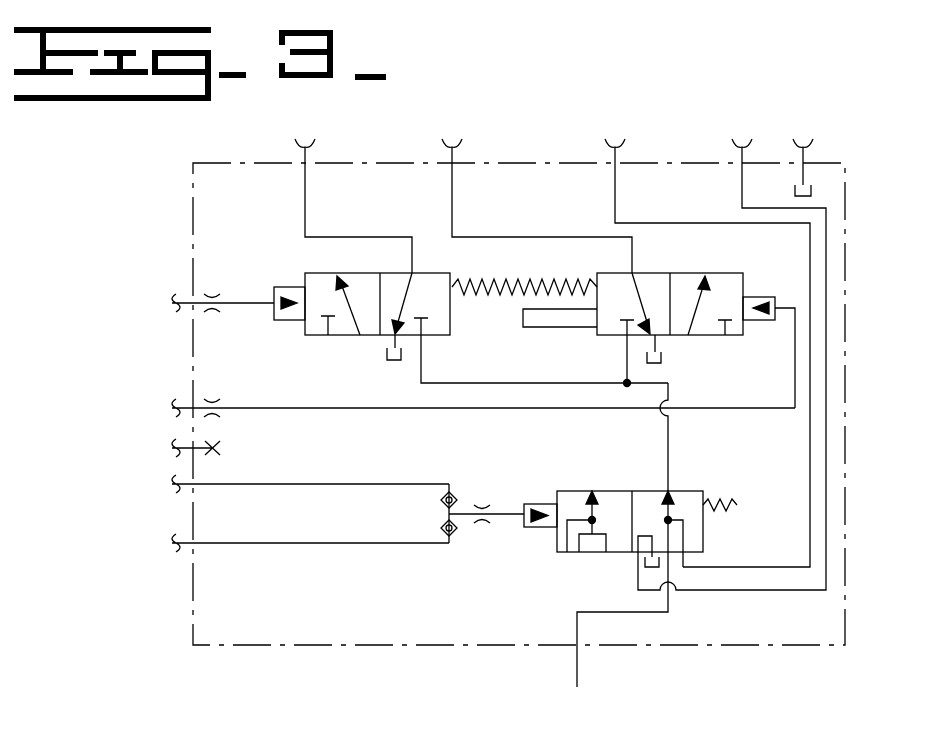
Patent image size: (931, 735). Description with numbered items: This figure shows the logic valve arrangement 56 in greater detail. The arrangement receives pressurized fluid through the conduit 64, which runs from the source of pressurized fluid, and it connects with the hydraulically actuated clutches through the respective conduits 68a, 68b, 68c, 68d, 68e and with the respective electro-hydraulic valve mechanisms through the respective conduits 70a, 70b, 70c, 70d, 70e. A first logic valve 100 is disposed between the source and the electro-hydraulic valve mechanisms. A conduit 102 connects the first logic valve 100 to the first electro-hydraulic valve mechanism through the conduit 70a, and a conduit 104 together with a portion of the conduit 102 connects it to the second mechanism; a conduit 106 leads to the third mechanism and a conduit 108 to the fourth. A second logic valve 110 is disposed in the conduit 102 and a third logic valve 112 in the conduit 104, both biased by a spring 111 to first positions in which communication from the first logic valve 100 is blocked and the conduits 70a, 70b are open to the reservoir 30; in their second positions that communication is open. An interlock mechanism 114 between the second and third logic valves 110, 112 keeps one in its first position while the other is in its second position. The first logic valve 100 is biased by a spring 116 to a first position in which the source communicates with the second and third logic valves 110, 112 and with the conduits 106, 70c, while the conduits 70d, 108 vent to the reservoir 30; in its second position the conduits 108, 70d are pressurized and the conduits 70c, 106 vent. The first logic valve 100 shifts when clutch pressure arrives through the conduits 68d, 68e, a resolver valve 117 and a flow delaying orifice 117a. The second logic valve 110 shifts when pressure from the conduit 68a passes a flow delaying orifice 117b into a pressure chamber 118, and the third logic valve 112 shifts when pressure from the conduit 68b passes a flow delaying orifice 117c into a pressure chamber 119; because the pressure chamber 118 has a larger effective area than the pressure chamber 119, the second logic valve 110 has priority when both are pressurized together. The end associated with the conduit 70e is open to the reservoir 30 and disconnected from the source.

The logic valve arrangement 56 is at (193, 218).
The conduit 64 is at (580, 655).
The conduit 68a is at (185, 303).
The conduit 68b is at (185, 408).
The conduit 68c is at (185, 448).
The conduit 68d is at (185, 484).
The conduit 68e is at (185, 543).
The conduit 70a is at (305, 153).
The conduit 70b is at (452, 153).
The conduit 70c is at (615, 153).
The conduit 70d is at (742, 153).
The conduit 70e is at (803, 153).
The reservoir 30 is at (392, 358).
The first logic valve 100 is at (562, 491).
The conduit 102 is at (305, 192).
The conduit 104 is at (452, 235).
The conduit 106 is at (808, 503).
The conduit 108 is at (707, 592).
The second logic valve 110 is at (312, 273).
The spring 111 is at (522, 284).
The third logic valve 112 is at (705, 278).
The interlock mechanism 114 is at (530, 325).
The spring 116 is at (737, 508).
The resolver valve 117 is at (456, 538).
The flow delaying orifice 117a is at (485, 530).
The flow delaying orifice 117b is at (212, 292).
The flow delaying orifice 117c is at (213, 418).
The pressure chamber 118 is at (285, 322).
The pressure chamber 119 is at (752, 322).